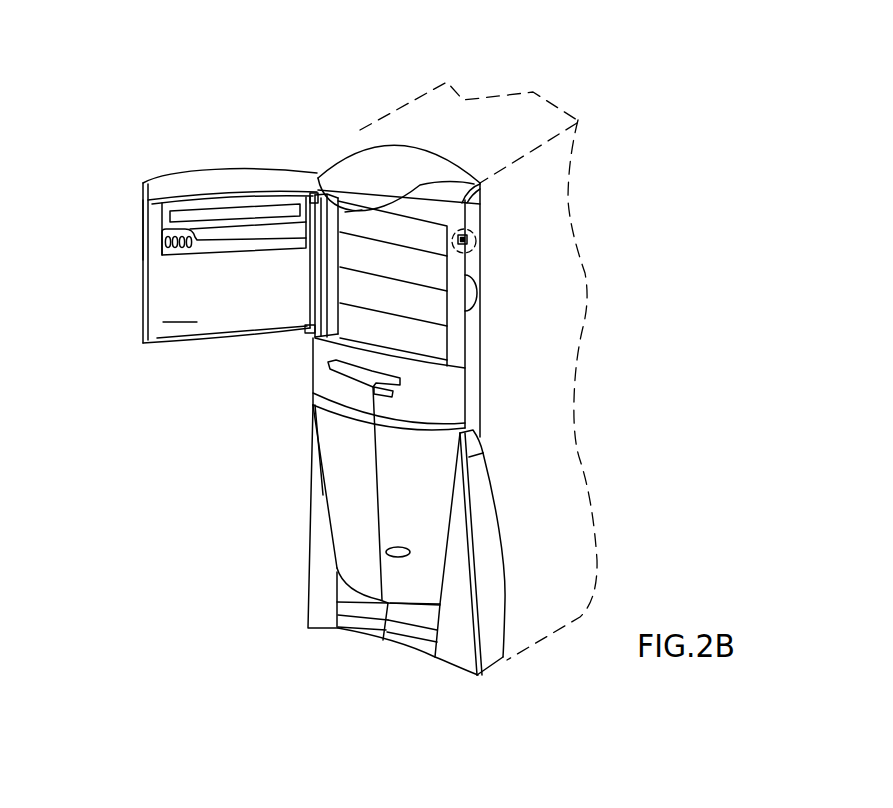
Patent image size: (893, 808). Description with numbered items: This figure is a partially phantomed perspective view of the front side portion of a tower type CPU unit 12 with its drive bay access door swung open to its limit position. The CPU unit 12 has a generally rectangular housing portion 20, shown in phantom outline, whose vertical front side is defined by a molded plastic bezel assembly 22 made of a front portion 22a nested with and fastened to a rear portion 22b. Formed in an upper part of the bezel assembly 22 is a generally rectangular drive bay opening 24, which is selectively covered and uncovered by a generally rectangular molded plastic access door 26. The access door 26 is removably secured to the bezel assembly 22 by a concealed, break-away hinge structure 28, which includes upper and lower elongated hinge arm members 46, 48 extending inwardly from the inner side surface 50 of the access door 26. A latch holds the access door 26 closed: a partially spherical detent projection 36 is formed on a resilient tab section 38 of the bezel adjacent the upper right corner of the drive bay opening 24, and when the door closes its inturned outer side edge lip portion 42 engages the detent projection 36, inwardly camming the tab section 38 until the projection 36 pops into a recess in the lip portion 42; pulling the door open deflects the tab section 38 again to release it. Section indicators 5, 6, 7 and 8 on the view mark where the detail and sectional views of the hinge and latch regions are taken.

The CPU unit 12 is at (370, 77).
The housing portion 20 is at (540, 90).
The bezel assembly 22 is at (388, 138).
The front portion 22a is at (352, 495).
The rear portion 22b is at (472, 397).
The drive bay opening 24 is at (403, 275).
The access door 26 is at (208, 348).
The hinge structure 28 is at (325, 191).
The detent projection 36 is at (459, 233).
The resilient tab section 38 is at (463, 240).
The outer side edge lip portion 42 is at (143, 218).
The upper hinge arm member 46 is at (362, 210).
The lower hinge arm member 48 is at (310, 327).
The inner side surface 50 is at (180, 308).
The section line 5 is at (232, 171).
The section line 6 is at (289, 153).
The detail circle 7 is at (478, 253).
The section line 8 is at (143, 173).